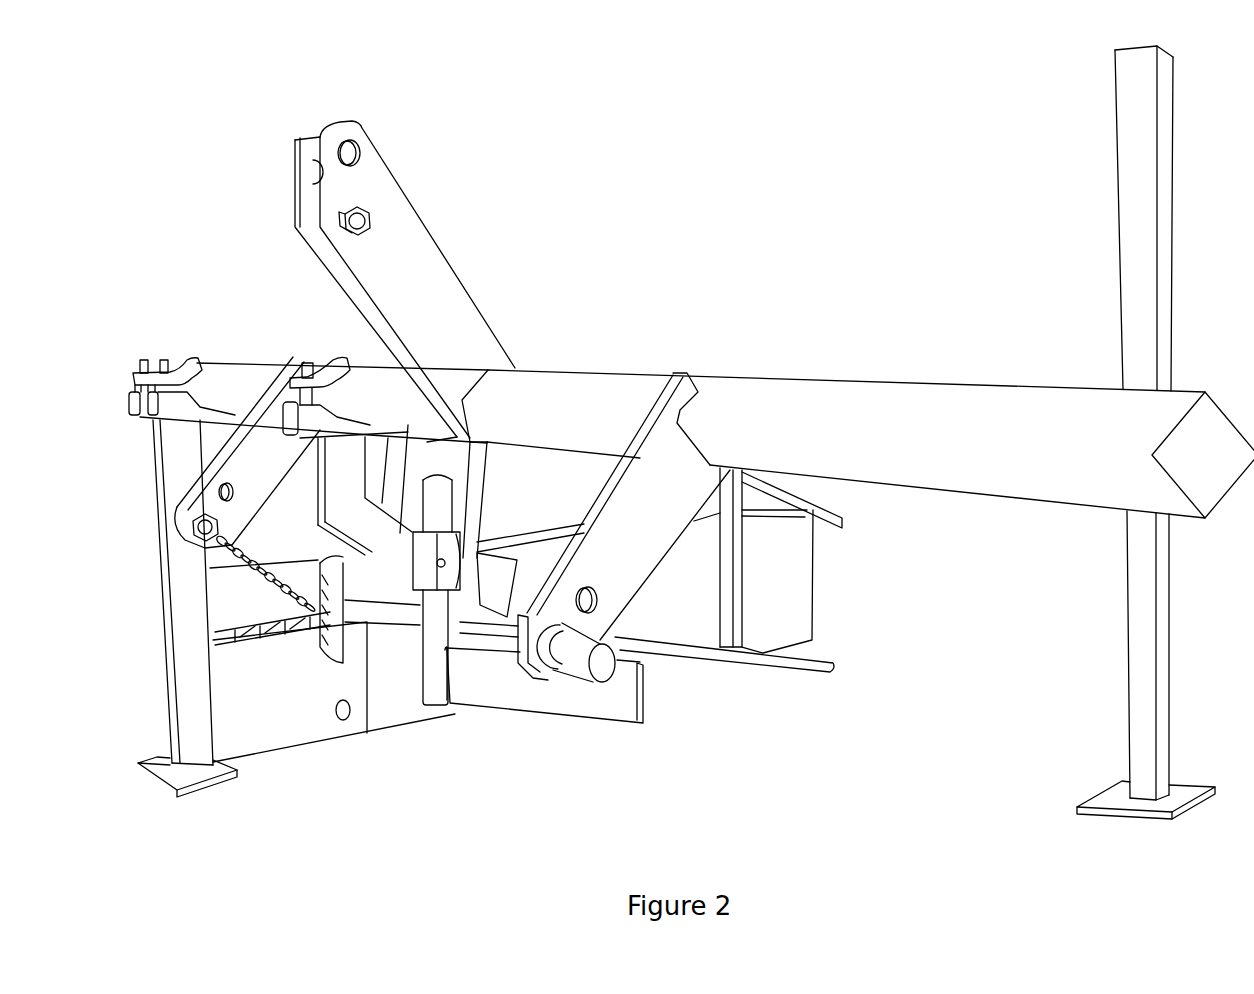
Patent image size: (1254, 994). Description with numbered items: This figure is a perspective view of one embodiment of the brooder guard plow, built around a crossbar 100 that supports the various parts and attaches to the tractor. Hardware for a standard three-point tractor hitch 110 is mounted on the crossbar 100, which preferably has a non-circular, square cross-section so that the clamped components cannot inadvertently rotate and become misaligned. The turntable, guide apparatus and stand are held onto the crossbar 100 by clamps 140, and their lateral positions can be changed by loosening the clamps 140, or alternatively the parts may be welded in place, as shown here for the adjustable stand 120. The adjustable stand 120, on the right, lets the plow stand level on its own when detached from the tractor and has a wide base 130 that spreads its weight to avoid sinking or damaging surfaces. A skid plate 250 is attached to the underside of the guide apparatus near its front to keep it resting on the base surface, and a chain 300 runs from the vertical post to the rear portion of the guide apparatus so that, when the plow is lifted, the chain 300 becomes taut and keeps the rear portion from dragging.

The crossbar 100 is at (970, 455).
The three-point tractor hitch 110 is at (655, 438).
The adjustable stand 120 is at (1140, 623).
The wide base 130 is at (1117, 800).
The clamps 140 is at (170, 355).
The skid plate 250 is at (162, 772).
The chain 300 is at (250, 560).